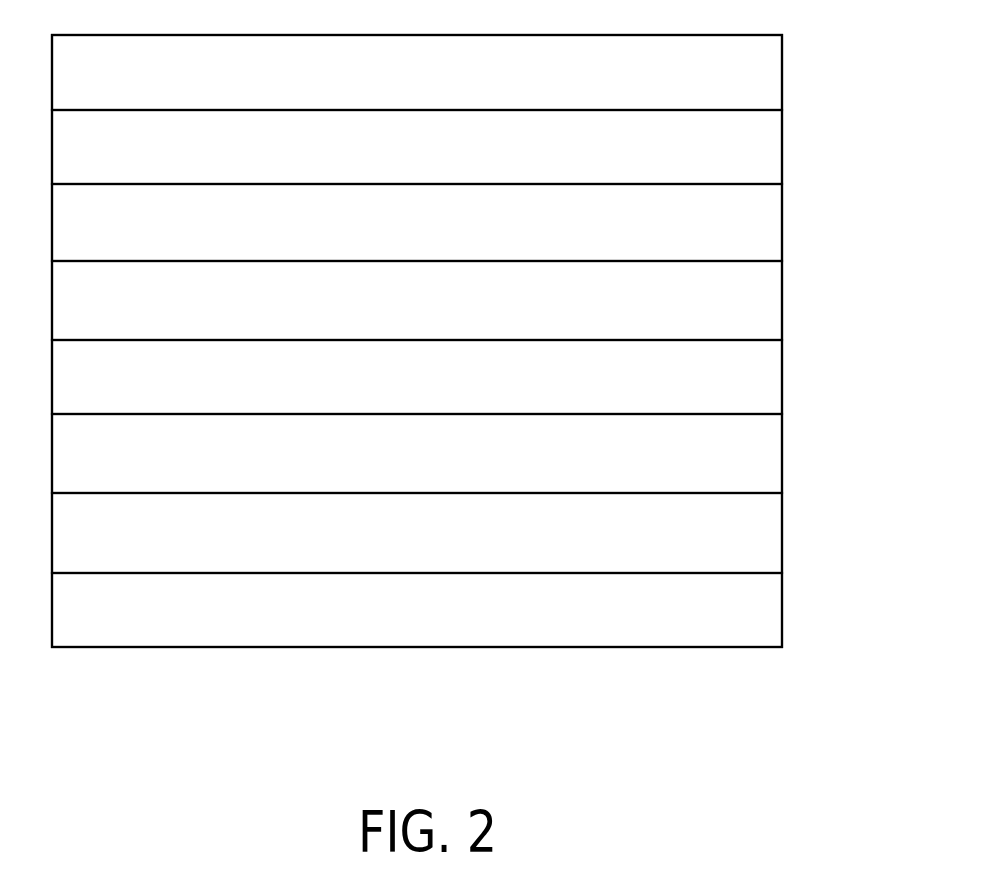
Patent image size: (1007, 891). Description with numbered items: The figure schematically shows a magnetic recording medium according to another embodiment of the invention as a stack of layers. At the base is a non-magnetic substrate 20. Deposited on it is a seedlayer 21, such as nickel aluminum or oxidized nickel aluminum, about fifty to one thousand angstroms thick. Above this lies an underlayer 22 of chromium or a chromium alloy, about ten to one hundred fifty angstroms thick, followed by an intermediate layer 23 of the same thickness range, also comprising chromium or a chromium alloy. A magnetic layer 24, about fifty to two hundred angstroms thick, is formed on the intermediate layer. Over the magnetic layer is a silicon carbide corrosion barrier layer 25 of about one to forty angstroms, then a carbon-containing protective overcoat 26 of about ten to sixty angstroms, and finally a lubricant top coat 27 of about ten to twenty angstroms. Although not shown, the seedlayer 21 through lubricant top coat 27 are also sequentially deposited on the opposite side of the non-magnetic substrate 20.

The non-magnetic substrate 20 is at (773, 606).
The seedlayer 21 is at (773, 531).
The underlayer 22 is at (773, 457).
The intermediate layer 23 is at (773, 379).
The magnetic layer 24 is at (773, 301).
The SiC corrosion barrier layer 25 is at (773, 224).
The carbon-containing protective overcoat 26 is at (773, 149).
The lubricant top coat 27 is at (773, 74).